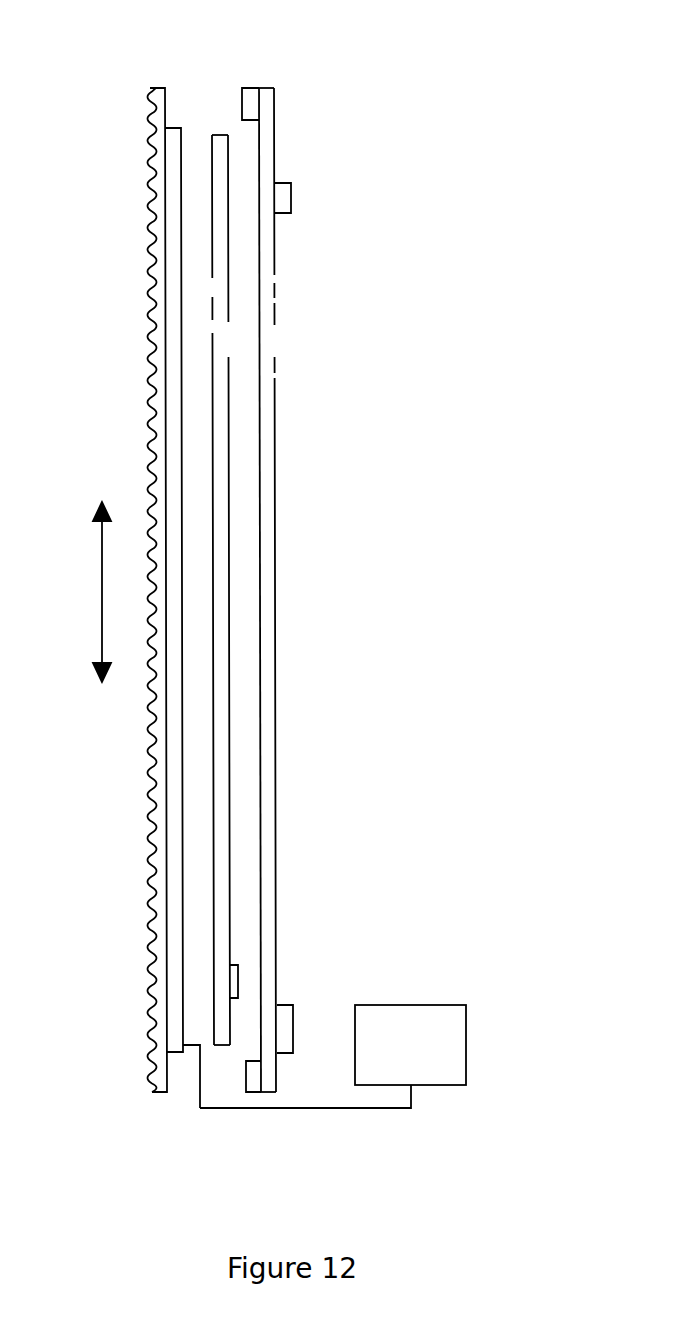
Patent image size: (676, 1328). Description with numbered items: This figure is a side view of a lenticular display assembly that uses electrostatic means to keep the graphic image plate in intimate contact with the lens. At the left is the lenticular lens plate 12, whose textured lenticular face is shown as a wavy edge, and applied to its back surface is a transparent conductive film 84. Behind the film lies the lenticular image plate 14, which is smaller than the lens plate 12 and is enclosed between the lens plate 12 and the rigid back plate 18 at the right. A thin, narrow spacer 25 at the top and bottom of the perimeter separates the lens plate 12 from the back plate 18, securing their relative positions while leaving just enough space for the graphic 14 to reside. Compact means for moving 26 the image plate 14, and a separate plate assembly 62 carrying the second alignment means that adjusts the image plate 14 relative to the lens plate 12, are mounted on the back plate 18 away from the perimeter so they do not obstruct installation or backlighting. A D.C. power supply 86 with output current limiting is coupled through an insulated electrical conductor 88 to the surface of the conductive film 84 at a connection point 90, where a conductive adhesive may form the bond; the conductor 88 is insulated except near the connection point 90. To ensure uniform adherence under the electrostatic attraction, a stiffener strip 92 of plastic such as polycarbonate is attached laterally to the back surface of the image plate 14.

The lenticular lens plate 12 is at (150, 93).
The lenticular image plate 14 is at (218, 145).
The rigid back plate 18 is at (265, 107).
The spacer 25 is at (248, 95).
The means for moving 26 is at (285, 1022).
The separate plate assembly 62 is at (283, 198).
The transparent conductive film 84 is at (176, 130).
The D.C. power supply 86 is at (422, 1003).
The insulated electrical conductor 88 is at (320, 1109).
The connection point 90 is at (192, 1047).
The stiffener strip 92 is at (235, 982).